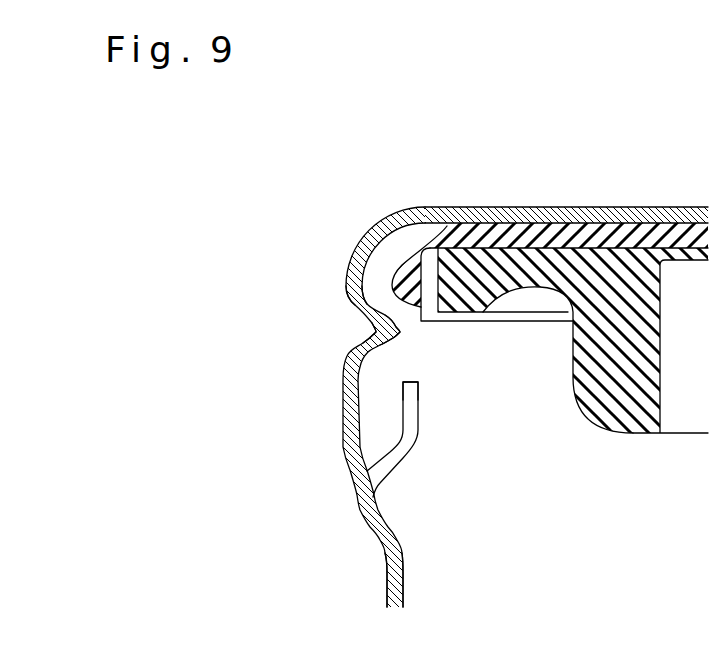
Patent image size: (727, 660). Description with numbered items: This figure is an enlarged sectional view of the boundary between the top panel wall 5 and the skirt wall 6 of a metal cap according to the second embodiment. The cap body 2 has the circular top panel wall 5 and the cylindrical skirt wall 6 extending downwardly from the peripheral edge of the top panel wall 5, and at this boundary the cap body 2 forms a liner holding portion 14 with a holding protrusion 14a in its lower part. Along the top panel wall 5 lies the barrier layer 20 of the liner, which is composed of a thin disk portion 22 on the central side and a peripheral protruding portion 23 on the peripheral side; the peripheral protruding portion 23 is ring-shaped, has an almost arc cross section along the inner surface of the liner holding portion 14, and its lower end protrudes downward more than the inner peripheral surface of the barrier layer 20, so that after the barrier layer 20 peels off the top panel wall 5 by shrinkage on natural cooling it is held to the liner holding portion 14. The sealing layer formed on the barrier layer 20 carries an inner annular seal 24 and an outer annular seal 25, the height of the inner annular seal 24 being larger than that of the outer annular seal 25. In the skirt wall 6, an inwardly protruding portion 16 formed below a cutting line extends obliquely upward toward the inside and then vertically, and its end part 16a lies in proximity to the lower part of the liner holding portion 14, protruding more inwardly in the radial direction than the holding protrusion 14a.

The cap body 2 is at (289, 259).
The top panel wall 5 is at (617, 207).
The skirt wall 6 is at (388, 583).
The liner holding portion 14 is at (356, 248).
The holding protrusion 14a is at (375, 332).
The inwardly protruding portion 16 is at (400, 457).
The end part 16a is at (415, 376).
The barrier layer 20 is at (466, 238).
The thin disk portion 22 is at (538, 207).
The peripheral protruding portion 23 is at (346, 287).
The inner annular seal 24 is at (628, 430).
The outer annular seal 25 is at (463, 306).